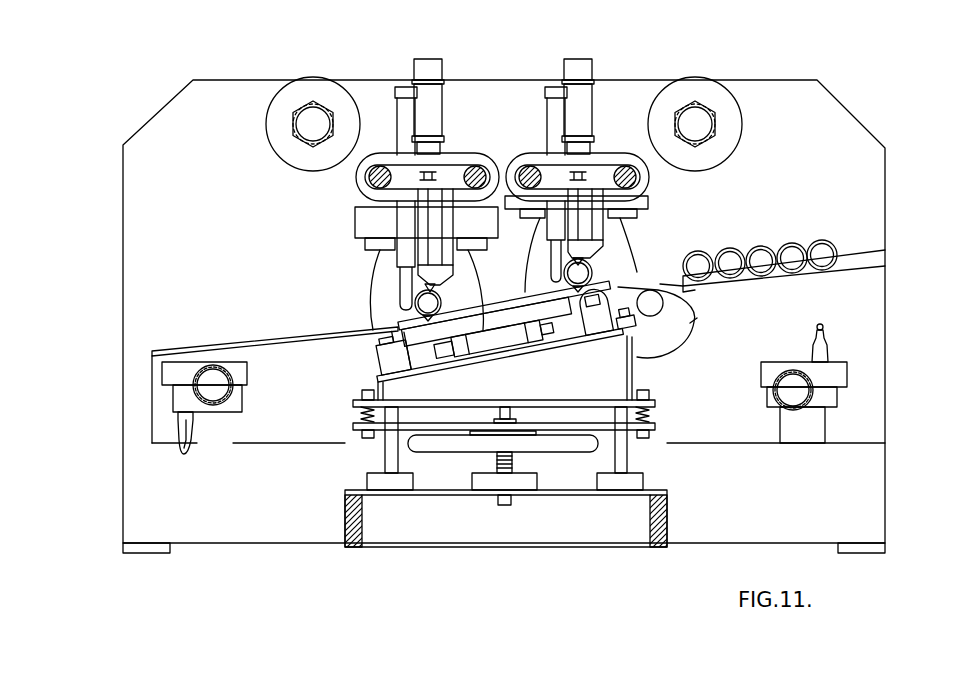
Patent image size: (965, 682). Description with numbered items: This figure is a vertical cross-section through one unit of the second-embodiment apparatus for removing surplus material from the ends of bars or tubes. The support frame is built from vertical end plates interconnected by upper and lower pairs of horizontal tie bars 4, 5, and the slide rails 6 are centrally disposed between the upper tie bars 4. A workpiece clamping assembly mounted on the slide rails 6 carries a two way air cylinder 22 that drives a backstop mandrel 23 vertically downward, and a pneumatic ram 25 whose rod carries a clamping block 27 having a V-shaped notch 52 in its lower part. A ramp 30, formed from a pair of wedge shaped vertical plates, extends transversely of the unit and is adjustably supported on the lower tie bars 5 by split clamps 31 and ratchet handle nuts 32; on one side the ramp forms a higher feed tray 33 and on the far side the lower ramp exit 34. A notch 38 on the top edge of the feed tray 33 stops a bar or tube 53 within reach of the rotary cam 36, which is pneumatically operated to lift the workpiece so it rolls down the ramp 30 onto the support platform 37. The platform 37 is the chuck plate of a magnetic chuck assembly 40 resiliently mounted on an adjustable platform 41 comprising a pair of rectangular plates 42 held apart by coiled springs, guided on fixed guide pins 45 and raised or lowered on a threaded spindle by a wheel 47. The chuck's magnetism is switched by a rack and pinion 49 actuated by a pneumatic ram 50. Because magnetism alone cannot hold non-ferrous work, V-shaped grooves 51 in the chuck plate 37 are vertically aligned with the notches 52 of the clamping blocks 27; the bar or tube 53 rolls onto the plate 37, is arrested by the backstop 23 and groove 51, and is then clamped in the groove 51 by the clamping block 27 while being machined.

The upper tie bars 4 is at (323, 108).
The lower tie bars 5 is at (233, 382).
The slide rails 6 is at (366, 177).
The air cylinder 22 is at (402, 88).
The mandrel 23 is at (414, 290).
The pneumatic ram 25 is at (430, 62).
The clamping block 27 is at (441, 304).
The ramp 30 is at (238, 332).
The split clamps 31 is at (143, 391).
The ratchet handle nuts 32 is at (183, 448).
The feed tray 33 is at (878, 260).
The ramp exit 34 is at (190, 348).
The rotary cam 36 is at (686, 333).
The support platform 37 is at (505, 305).
The notch 38 is at (698, 285).
The magnetic chuck assembly 40 is at (373, 353).
The adjustable platform 41 is at (657, 417).
The rectangular plates 42 is at (566, 428).
The guide pins 45 is at (385, 462).
The wheel 47 is at (432, 443).
The rack and pinion 49 is at (607, 280).
The pneumatic ram 50 is at (517, 345).
The V-shaped grooves 51 is at (441, 320).
The V-shaped notches 52 is at (424, 283).
The bar or tube 53 is at (415, 300).